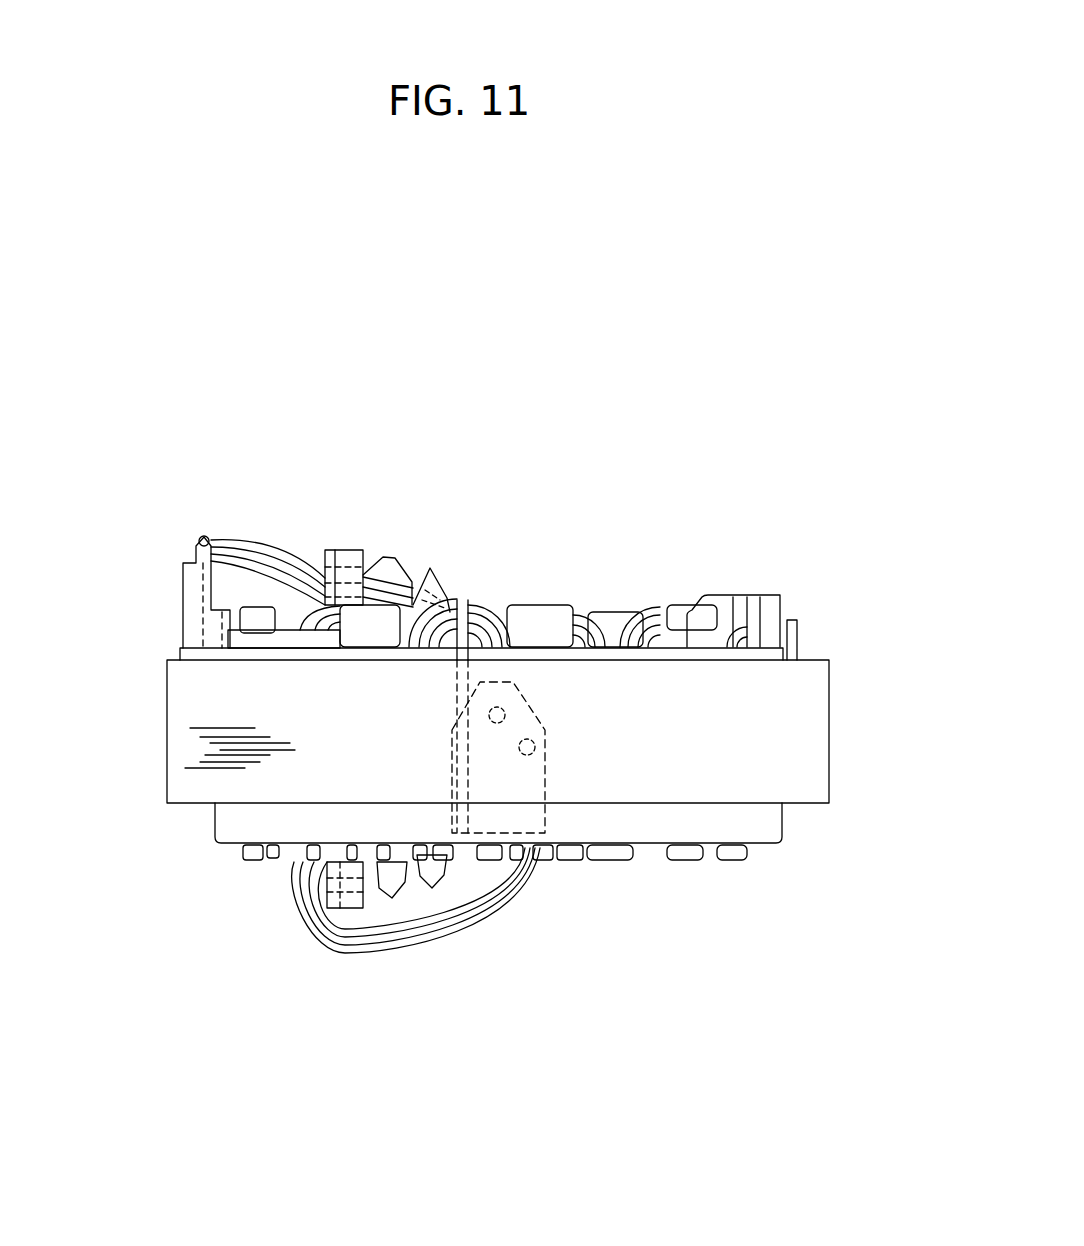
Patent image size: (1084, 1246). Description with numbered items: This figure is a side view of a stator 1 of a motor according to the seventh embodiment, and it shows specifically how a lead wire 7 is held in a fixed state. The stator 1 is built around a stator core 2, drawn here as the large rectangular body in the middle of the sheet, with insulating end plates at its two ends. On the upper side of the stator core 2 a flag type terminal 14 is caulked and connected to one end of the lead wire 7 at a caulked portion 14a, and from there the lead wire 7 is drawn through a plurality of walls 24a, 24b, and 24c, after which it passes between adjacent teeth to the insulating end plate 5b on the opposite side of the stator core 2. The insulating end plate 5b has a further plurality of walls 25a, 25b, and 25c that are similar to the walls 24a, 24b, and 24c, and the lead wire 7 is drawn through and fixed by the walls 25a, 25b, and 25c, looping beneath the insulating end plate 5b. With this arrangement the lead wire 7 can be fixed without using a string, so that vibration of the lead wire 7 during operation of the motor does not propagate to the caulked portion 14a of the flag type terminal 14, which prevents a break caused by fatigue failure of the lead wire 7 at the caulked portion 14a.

The stator 1 is at (848, 712).
The stator core 2 is at (200, 710).
The insulating end plate 5b is at (227, 823).
The lead wire 7 is at (260, 532).
The flag type terminal 14 is at (187, 580).
The caulked portion 14a is at (198, 538).
The wall 24a is at (348, 552).
The wall 24b is at (390, 553).
The wall 24c is at (430, 570).
The wall 25a is at (350, 900).
The wall 25b is at (397, 905).
The wall 25c is at (500, 910).